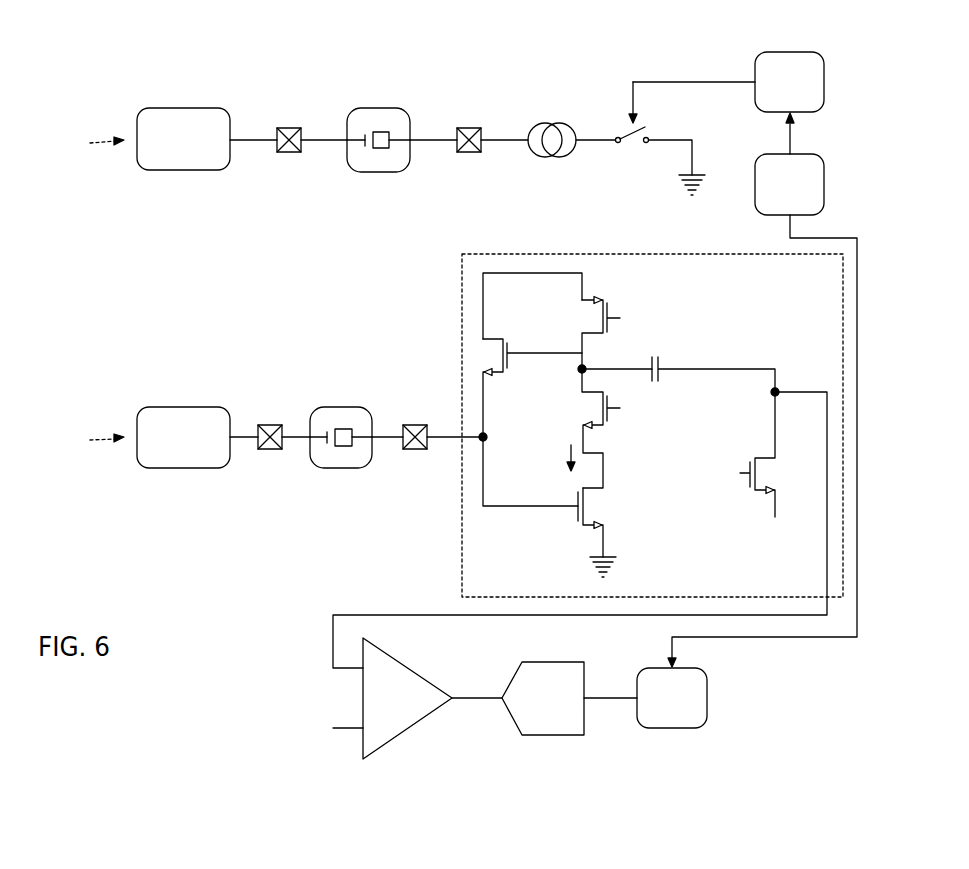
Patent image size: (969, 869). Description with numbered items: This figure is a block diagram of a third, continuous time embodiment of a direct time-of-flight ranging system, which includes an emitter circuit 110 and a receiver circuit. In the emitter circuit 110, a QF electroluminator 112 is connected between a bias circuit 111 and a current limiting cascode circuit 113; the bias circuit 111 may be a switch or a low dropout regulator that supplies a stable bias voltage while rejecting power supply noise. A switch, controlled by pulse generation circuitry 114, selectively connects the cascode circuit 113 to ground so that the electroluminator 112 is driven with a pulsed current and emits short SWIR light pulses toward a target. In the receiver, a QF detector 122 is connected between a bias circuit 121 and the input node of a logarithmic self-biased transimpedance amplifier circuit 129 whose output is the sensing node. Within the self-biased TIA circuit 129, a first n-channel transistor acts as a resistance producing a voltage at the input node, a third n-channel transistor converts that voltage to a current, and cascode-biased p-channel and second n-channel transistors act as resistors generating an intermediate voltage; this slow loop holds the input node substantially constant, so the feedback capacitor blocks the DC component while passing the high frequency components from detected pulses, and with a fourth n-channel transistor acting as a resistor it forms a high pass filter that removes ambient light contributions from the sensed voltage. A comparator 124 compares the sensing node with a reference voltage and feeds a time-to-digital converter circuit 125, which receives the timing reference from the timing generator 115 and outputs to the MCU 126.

The emitter circuit 110 is at (90, 140).
The bias circuit 111 is at (163, 172).
The QF electroluminator 112 is at (370, 174).
The current limiting cascode circuit 113 is at (540, 158).
The pulse generation circuitry 114 is at (757, 113).
The timing generator 115 is at (757, 216).
The bias circuit 121 is at (163, 470).
The QF detector 122 is at (332, 470).
The comparator 124 is at (411, 729).
The time-to-digital converter circuit 125 is at (531, 737).
The MCU 126 is at (656, 731).
The logarithmic self-biased transimpedance amplifier circuit 129 is at (462, 254).